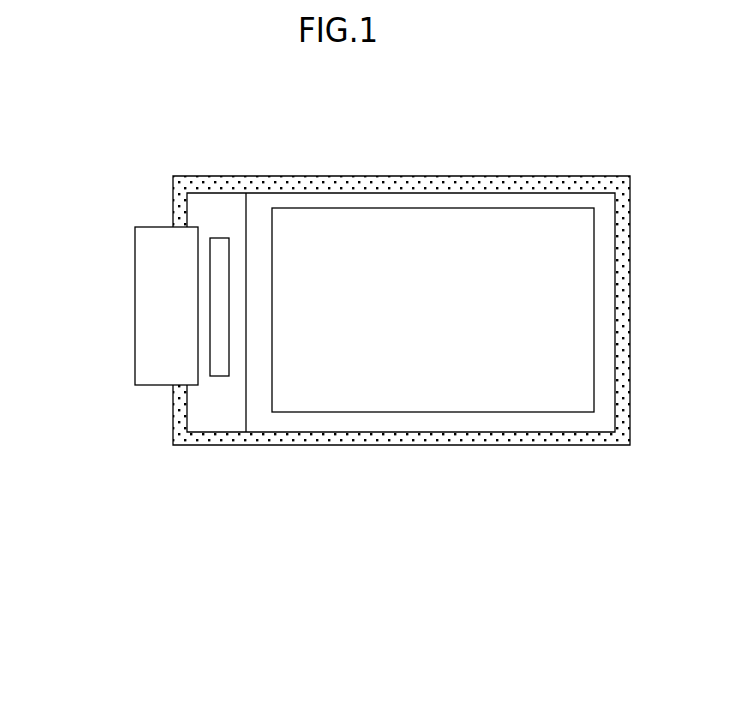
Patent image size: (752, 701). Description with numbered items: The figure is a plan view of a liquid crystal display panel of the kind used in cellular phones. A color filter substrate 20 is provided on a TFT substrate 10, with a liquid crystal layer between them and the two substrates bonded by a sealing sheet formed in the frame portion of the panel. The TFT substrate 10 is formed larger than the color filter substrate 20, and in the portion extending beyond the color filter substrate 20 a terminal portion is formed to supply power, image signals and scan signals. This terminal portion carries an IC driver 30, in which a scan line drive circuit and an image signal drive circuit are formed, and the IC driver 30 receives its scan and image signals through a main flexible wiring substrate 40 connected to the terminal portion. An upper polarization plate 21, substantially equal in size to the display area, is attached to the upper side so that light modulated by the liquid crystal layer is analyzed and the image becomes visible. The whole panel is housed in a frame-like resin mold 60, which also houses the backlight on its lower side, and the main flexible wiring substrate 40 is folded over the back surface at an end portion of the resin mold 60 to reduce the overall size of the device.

The TFT substrate 10 is at (218, 203).
The color filter substrate 20 is at (413, 205).
The upper polarization plate 21 is at (528, 227).
The IC driver 30 is at (220, 302).
The main flexible wiring substrate 40 is at (148, 312).
The resin mold 60 is at (240, 437).